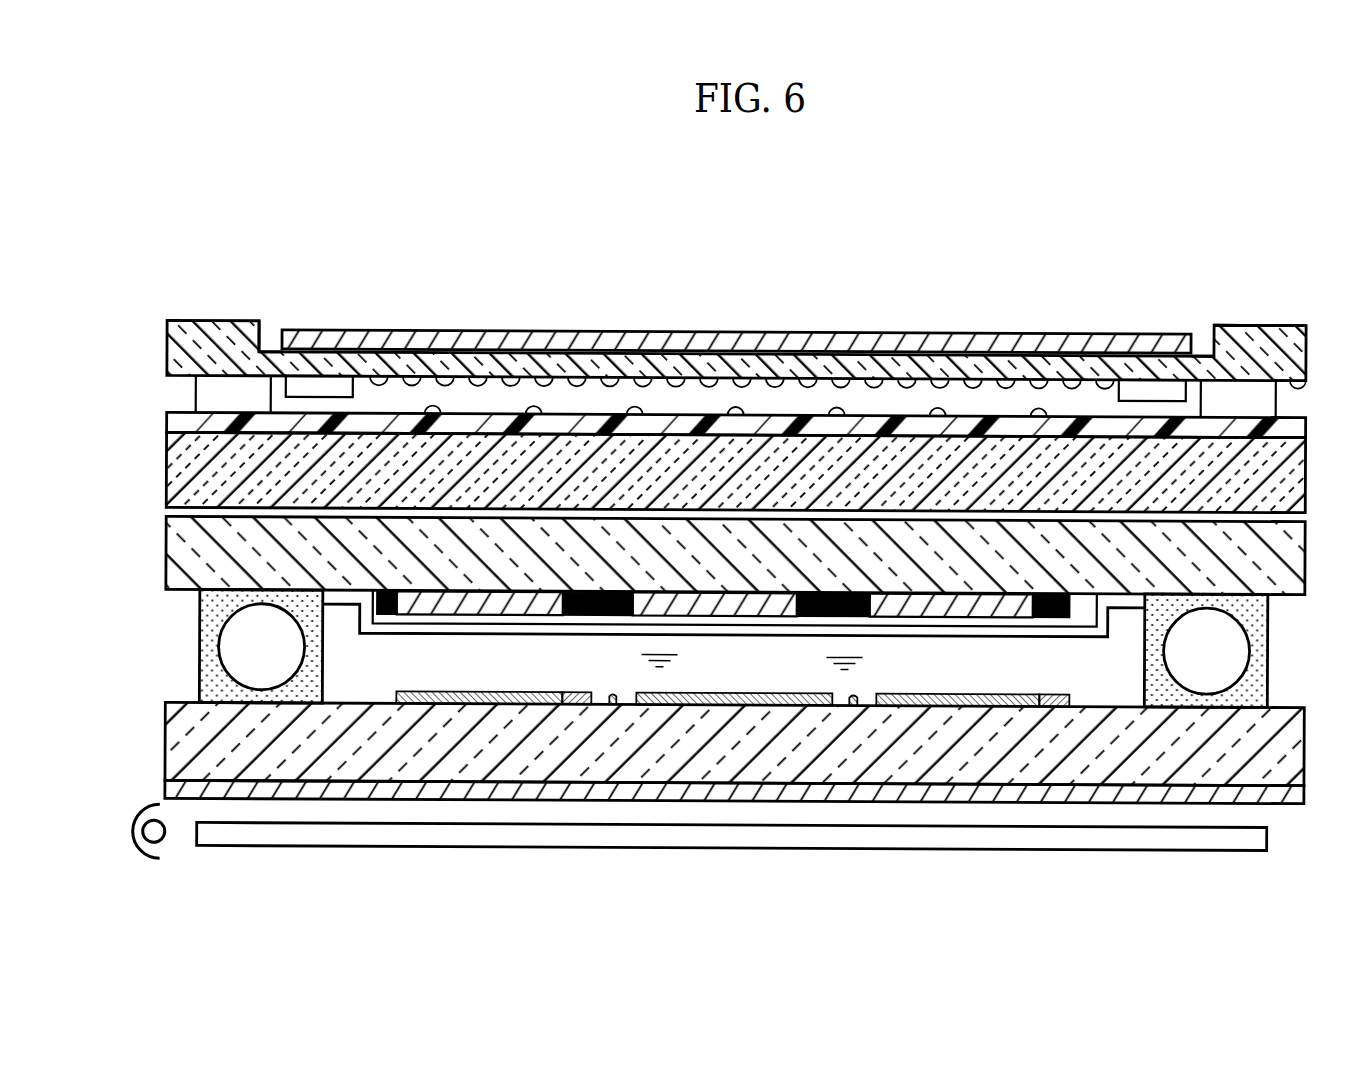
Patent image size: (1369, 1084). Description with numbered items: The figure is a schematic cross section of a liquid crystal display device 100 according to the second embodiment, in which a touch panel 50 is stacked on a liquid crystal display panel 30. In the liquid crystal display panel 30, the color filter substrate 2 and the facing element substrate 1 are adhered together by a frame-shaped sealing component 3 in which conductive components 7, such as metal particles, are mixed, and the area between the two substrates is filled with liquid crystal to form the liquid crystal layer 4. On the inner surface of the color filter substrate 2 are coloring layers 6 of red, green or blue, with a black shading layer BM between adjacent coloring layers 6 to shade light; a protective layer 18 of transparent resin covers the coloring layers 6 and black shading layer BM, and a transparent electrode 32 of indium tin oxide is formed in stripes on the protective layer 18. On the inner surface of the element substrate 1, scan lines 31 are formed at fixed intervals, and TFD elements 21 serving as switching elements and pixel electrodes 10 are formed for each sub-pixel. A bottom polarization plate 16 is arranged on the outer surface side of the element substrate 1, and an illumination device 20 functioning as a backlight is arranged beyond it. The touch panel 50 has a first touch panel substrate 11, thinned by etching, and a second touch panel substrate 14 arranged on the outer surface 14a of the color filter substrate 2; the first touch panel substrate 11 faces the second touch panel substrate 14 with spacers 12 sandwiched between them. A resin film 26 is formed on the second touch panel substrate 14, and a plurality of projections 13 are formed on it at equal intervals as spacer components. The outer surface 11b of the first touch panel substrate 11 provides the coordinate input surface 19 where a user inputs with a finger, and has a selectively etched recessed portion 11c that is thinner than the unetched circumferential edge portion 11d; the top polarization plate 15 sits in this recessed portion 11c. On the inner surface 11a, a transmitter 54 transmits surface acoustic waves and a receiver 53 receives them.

The liquid crystal display device 100 is at (633, 278).
The touch panel 50 is at (87, 315).
The liquid crystal display panel 30 is at (87, 520).
The first touch panel substrate 11 is at (166, 340).
The inner surface 11a is at (1303, 382).
The outer surface 11b is at (273, 352).
The recessed portion 11c is at (1201, 338).
The circumferential edge portion 11d is at (1265, 323).
The coordinate input surface 19 is at (262, 307).
The top polarization plate 15 is at (962, 332).
The projections 13 is at (735, 406).
The transmitter 54 is at (318, 388).
The receiver 53 is at (1152, 388).
The spacers 12 is at (205, 398).
The resin film 26 is at (168, 432).
The second touch panel substrate 14 is at (168, 471).
The outer surface 14a is at (1297, 433).
The color filter substrate 2 is at (166, 547).
The sealing component 3 is at (1270, 619).
The conductive components 7 is at (1240, 651).
The coloring layer 6 is at (710, 617).
The black shading layer BM is at (845, 619).
The transparent electrode 32 is at (1042, 635).
The protective layer 18 is at (1083, 624).
The liquid crystal layer 4 is at (781, 681).
The pixel electrodes 10 is at (520, 692).
The TFD elements 21 is at (576, 692).
The scan lines 31 is at (614, 693).
The element substrate 1 is at (166, 737).
The bottom polarization plate 16 is at (1298, 792).
The illumination device 20 is at (860, 849).